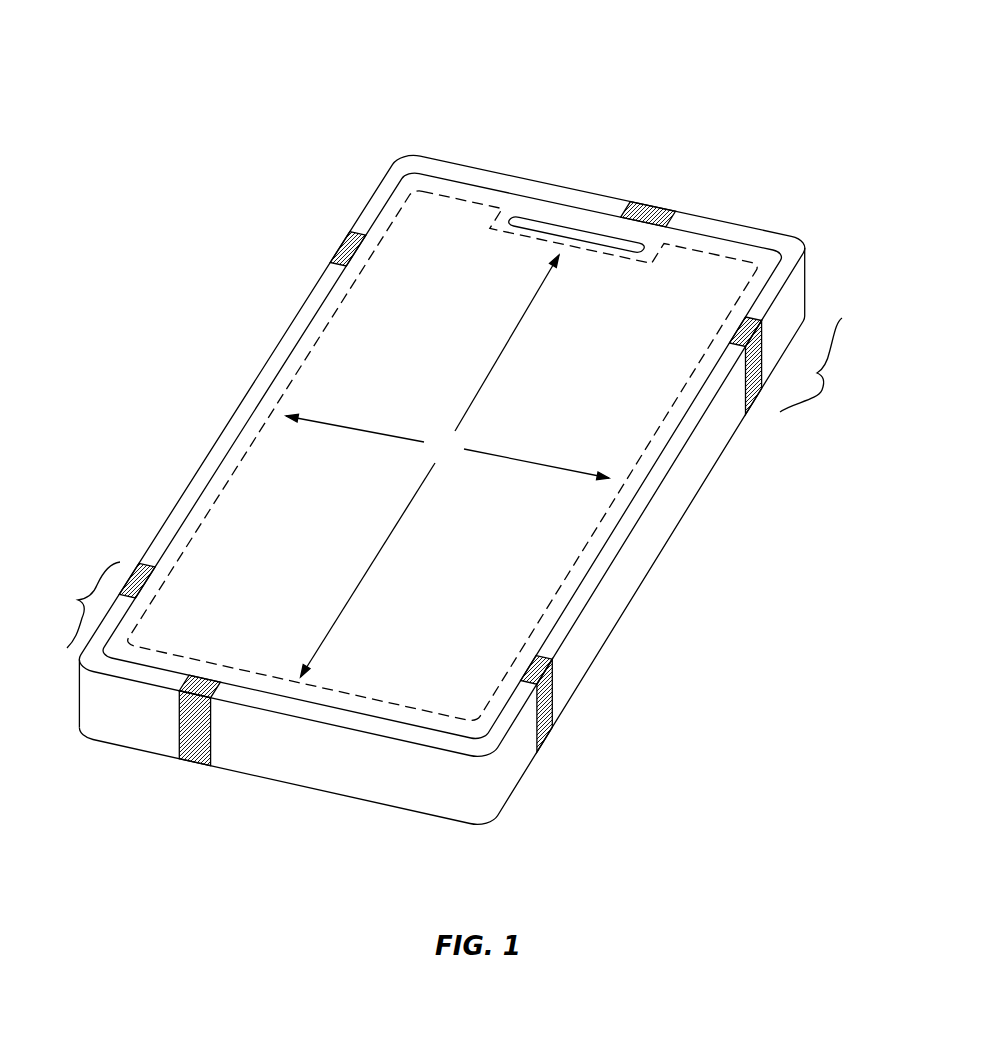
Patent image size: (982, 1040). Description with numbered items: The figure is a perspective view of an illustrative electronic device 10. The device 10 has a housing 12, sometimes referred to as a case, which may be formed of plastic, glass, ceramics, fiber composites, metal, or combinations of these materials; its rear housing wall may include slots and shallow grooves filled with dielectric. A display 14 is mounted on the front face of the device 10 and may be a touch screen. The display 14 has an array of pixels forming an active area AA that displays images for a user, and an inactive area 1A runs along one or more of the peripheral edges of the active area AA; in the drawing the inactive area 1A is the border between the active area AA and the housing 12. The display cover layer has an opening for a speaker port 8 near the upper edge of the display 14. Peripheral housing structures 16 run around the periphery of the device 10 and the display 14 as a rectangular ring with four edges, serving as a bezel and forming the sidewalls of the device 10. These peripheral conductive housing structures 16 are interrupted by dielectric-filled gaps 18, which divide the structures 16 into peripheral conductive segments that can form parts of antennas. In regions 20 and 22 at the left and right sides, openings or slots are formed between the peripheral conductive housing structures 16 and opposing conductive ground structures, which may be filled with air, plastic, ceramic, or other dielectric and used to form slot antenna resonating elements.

The electronic device 10 is at (728, 77).
The housing 12 is at (808, 273).
The display 14 is at (448, 233).
The peripheral housing structures 16 is at (653, 535).
The gaps 18 is at (337, 248).
The region 20 is at (85, 605).
The region 22 is at (816, 365).
The speaker port 8 is at (535, 227).
The inactive area 1A is at (658, 240).
The active area AA is at (447, 466).